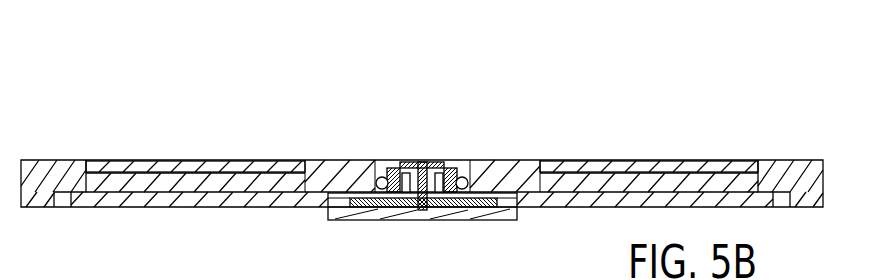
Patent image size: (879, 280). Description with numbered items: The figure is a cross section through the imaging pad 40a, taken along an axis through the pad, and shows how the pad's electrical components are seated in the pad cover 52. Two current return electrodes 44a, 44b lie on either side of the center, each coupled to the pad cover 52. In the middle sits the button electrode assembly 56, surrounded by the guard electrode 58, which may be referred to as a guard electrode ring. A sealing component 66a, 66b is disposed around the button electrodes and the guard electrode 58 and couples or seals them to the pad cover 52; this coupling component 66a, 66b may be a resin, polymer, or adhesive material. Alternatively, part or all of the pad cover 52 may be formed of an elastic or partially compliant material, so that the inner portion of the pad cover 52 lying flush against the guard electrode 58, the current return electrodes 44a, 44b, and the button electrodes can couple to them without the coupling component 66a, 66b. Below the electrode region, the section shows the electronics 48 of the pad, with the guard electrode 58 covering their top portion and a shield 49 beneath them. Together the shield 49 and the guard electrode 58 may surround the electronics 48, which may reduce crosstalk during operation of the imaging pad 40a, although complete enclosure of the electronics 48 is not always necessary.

The imaging pad 40a is at (268, 108).
The current return electrode 44a is at (648, 160).
The current return electrode 44b is at (203, 160).
The electronics 48 is at (430, 206).
The shield 49 is at (402, 220).
The pad cover 52 is at (805, 160).
The button electrode assembly 56 is at (427, 168).
The guard electrode 58 is at (398, 165).
The sealing component 66a is at (419, 168).
The sealing component 66b is at (376, 181).